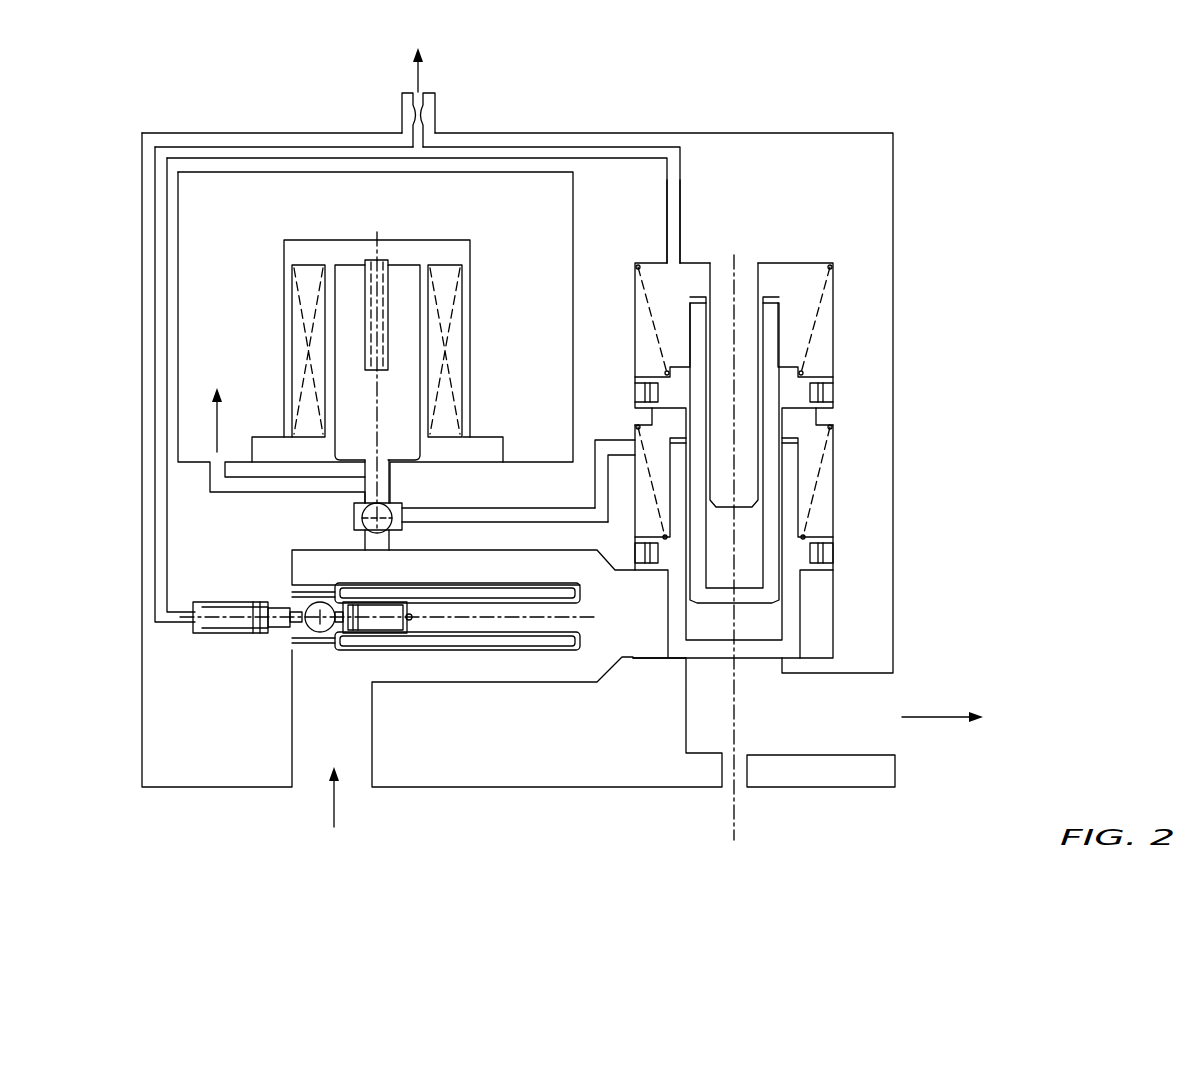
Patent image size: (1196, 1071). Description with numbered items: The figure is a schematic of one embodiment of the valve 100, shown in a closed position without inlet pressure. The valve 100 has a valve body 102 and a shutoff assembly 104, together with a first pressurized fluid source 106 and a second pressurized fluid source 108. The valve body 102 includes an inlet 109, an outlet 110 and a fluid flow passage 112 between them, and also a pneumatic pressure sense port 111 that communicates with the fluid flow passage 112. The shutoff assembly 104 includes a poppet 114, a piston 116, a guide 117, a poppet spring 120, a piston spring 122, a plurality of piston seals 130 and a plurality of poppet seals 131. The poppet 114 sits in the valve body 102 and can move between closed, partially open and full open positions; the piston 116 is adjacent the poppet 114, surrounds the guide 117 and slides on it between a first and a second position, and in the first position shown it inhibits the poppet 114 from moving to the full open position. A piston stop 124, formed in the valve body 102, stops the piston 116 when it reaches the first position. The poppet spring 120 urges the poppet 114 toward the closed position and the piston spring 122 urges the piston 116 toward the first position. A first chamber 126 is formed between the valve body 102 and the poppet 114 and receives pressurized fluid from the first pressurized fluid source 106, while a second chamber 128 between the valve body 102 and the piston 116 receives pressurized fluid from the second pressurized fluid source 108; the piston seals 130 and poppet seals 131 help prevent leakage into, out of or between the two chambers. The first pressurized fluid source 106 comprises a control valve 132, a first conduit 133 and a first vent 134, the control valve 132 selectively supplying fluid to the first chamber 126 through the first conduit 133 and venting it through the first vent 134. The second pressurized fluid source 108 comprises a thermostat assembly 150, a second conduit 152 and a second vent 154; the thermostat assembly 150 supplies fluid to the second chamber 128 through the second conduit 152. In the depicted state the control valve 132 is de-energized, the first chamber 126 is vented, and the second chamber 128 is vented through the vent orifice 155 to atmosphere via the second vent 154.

The valve 100 is at (108, 96).
The valve body 102 is at (885, 187).
The shutoff assembly 104 is at (805, 283).
The first pressurized fluid source 106 is at (616, 530).
The second pressurized fluid source 108 is at (686, 146).
The inlet 109 is at (334, 808).
The outlet 110 is at (943, 713).
The pneumatic pressure sense port 111 is at (748, 795).
The fluid flow passage 112 is at (829, 731).
The poppet 114 is at (792, 623).
The piston 116 is at (773, 325).
The guide 117 is at (752, 365).
The poppet spring 120 is at (825, 453).
The piston spring 122 is at (822, 298).
The piston stop 124 is at (637, 412).
The first chamber 126 is at (638, 426).
The second chamber 128 is at (700, 273).
The piston seals 130 is at (830, 392).
The poppet seals 131 is at (830, 553).
The control valve 132 is at (478, 232).
The first conduit 133 is at (490, 515).
The first vent 134 is at (218, 417).
The thermostat assembly 150 is at (330, 660).
The second conduit 152 is at (163, 522).
The second vent 154 is at (418, 78).
The vent orifice 155 is at (410, 112).